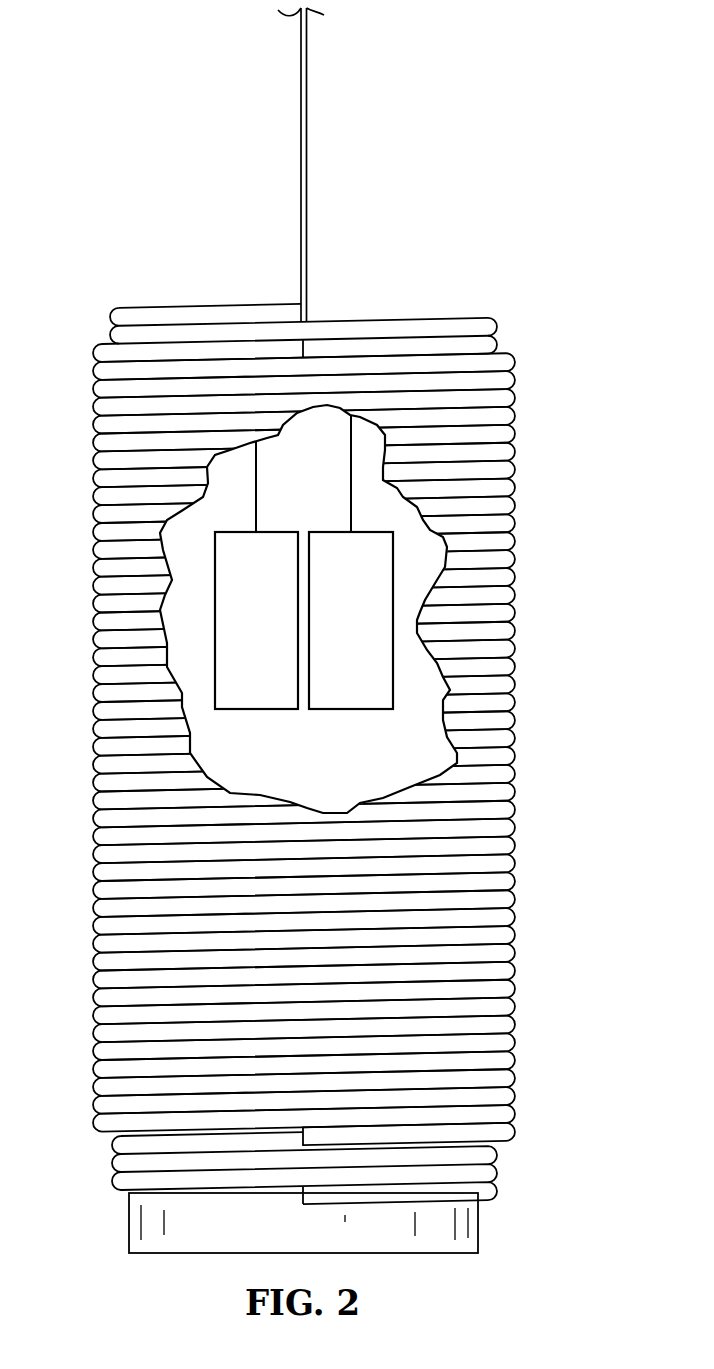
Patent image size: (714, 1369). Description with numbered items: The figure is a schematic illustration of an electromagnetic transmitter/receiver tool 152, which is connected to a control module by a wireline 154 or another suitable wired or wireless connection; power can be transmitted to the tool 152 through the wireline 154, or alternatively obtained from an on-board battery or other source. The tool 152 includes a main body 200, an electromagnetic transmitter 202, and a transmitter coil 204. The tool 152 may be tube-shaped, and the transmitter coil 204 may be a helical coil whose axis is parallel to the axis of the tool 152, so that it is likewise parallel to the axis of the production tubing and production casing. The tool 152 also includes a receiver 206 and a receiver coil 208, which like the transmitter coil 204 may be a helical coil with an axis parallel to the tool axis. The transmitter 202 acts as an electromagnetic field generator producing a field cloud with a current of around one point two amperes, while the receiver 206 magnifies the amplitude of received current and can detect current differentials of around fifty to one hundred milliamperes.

The EM tool 152 is at (98, 240).
The wireline 154 is at (300, 151).
The main body 200 is at (129, 1229).
The electromagnetic transmitter 202 is at (257, 710).
The transmitter coil 204 is at (515, 670).
The receiver 206 is at (350, 710).
The receiver coil 208 is at (500, 1197).